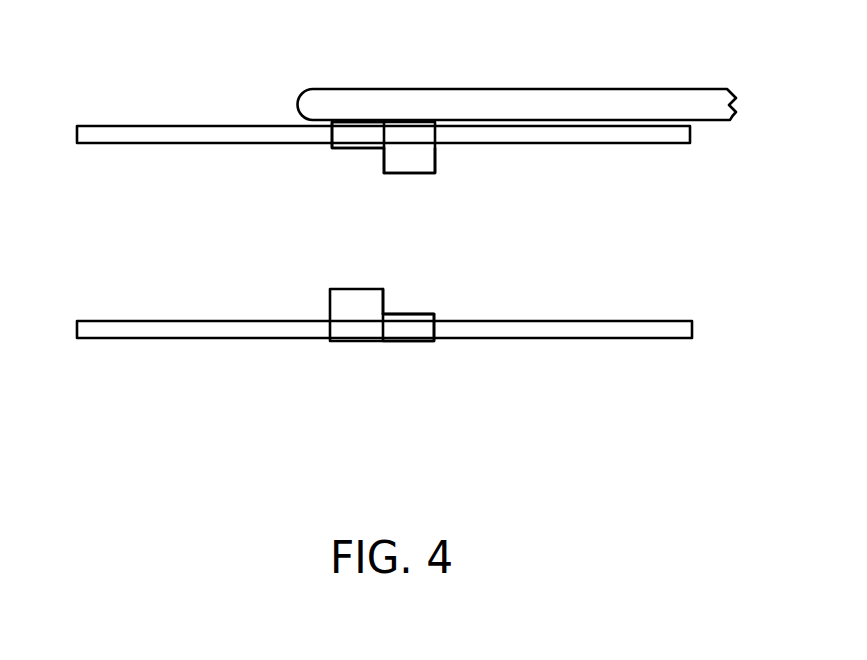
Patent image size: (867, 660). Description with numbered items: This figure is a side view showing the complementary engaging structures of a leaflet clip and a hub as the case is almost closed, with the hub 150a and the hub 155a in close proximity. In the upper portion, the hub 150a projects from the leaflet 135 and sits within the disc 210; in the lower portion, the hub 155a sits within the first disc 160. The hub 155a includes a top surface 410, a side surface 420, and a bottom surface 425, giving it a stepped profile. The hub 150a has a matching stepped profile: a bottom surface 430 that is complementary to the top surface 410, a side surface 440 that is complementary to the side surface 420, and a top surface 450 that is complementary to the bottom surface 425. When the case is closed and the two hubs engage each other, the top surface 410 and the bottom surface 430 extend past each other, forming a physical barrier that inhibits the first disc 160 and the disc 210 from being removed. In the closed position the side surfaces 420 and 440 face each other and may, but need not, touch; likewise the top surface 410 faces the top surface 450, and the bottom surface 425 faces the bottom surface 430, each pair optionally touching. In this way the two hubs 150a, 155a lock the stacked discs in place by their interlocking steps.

The leaflet 135 is at (530, 90).
The hub 150a is at (347, 128).
The hub 155a is at (388, 335).
The first disc 160 is at (652, 338).
The disc 210 is at (653, 143).
The top surface 410 is at (352, 289).
The side surface 420 is at (385, 290).
The bottom surface 425 is at (412, 314).
The bottom surface 430 is at (408, 173).
The side surface 440 is at (384, 160).
The top surface 450 is at (348, 148).